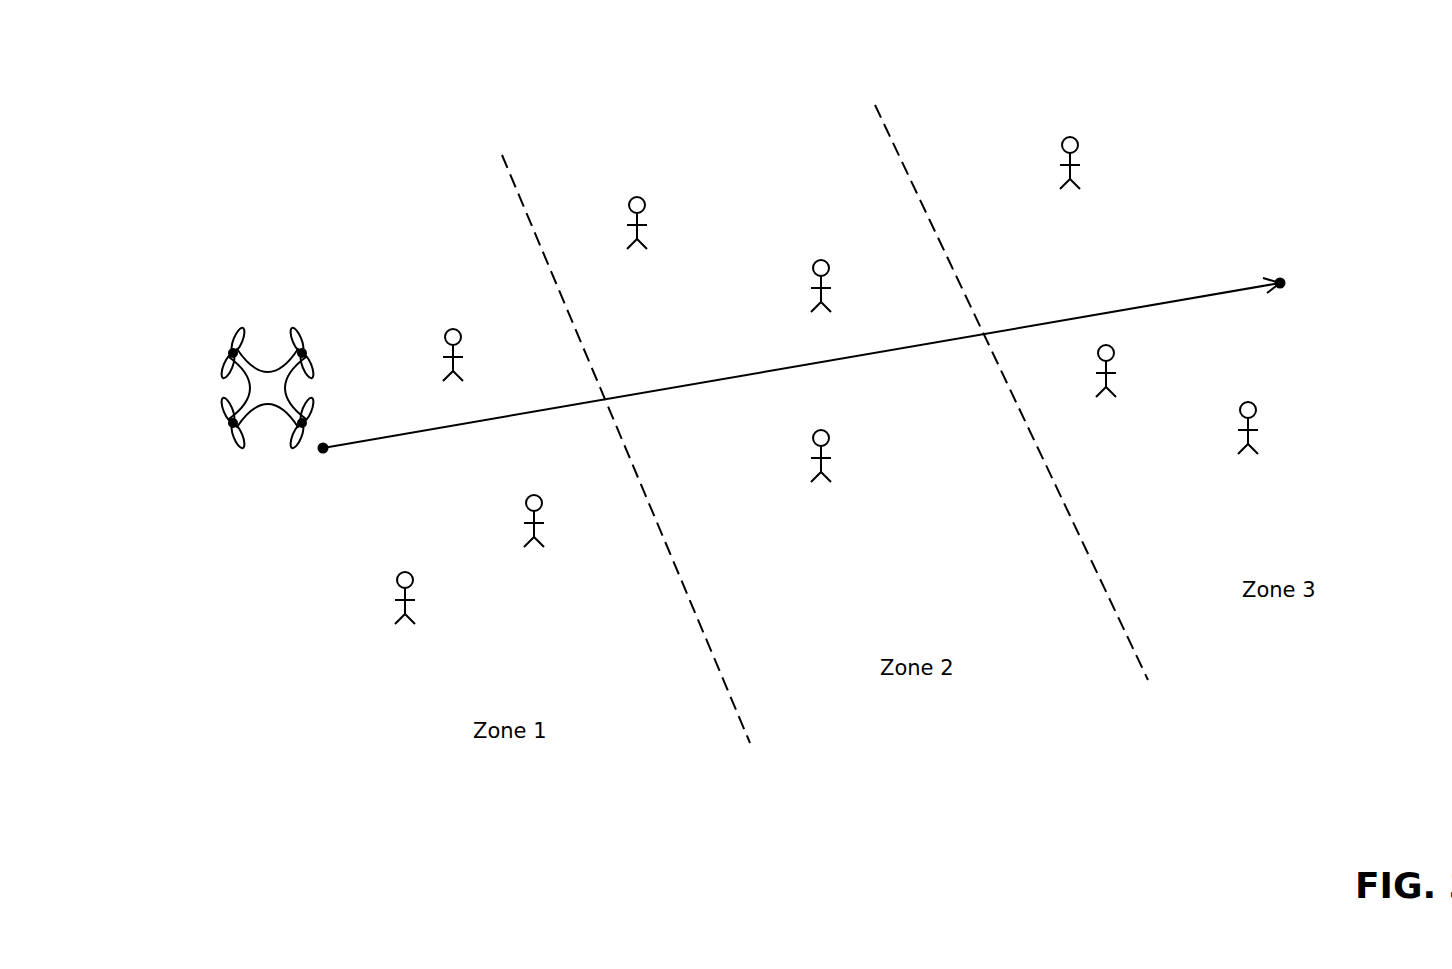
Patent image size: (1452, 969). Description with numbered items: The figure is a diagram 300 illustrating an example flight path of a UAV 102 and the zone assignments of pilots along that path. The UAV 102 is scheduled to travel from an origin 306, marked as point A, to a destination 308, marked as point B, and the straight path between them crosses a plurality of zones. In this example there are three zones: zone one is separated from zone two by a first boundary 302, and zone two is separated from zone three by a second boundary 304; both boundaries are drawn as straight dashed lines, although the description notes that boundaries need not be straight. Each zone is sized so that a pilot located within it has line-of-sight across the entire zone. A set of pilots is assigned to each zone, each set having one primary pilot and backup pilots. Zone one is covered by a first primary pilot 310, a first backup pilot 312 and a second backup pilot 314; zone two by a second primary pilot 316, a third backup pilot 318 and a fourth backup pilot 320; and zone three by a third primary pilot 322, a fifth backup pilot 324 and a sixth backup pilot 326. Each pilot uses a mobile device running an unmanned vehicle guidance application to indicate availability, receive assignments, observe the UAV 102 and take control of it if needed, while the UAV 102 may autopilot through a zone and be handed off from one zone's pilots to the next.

The diagram 300 is at (150, 44).
The UAV 102 is at (232, 347).
The first boundary 302 is at (502, 155).
The second boundary 304 is at (875, 105).
The origin 306 is at (323, 446).
The destination 308 is at (1280, 283).
The first primary pilot 310 is at (453, 329).
The first backup pilot 312 is at (405, 572).
The second backup pilot 314 is at (534, 495).
The second primary pilot 316 is at (821, 260).
The third backup pilot 318 is at (637, 197).
The fourth backup pilot 320 is at (821, 430).
The third primary pilot 322 is at (1106, 345).
The fifth backup pilot 324 is at (1070, 137).
The sixth backup pilot 326 is at (1248, 402).